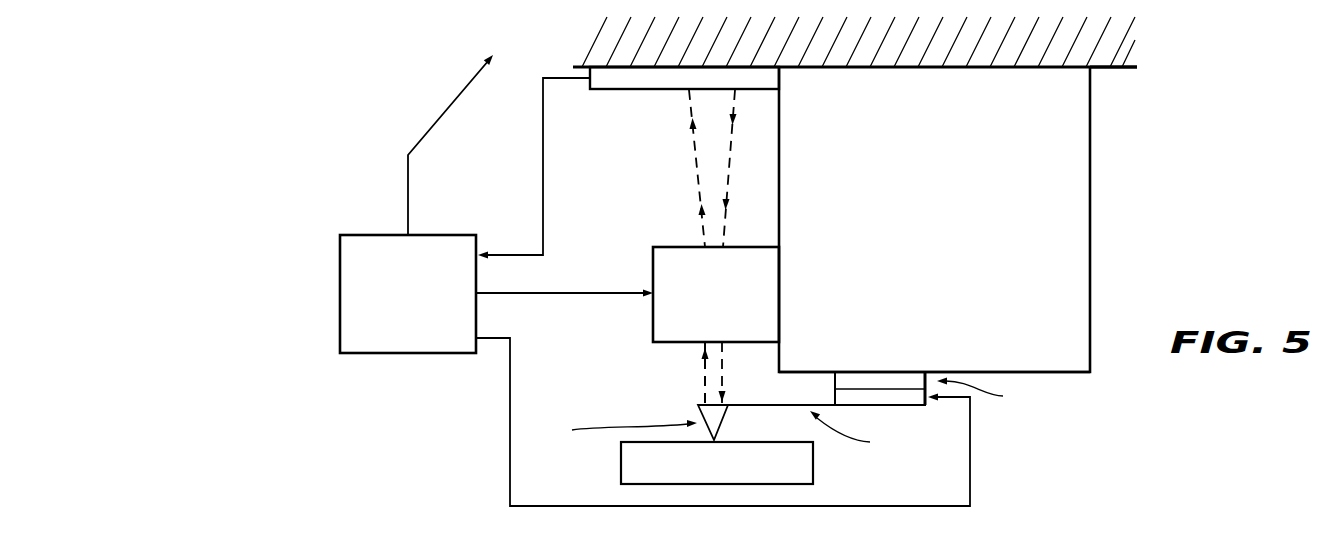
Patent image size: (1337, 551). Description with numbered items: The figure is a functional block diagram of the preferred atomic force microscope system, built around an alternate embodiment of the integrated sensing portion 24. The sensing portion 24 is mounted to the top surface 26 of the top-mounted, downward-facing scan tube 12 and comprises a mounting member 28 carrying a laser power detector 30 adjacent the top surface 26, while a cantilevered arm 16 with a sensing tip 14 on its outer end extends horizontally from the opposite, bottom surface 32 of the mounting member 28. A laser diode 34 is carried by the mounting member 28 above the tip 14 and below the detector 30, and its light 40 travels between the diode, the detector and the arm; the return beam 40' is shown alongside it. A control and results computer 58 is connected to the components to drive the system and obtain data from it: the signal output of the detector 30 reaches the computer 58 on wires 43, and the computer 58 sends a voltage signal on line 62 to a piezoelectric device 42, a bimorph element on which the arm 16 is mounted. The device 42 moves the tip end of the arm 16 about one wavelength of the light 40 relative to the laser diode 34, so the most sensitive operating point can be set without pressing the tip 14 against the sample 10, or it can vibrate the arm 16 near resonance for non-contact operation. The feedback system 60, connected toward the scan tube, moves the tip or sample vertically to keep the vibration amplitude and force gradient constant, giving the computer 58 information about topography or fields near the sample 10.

The sample 10 is at (627, 468).
The scan tube 12 is at (591, 38).
The sensing tip 14 is at (728, 409).
The cantilevered arm 16 is at (795, 405).
The sensing portion 24 is at (634, 353).
The top surface 26 is at (1106, 70).
The mounting member 28 is at (1090, 254).
The laser power detector 30 is at (638, 90).
The bottom surface 32 is at (998, 372).
The laser diode 34 is at (656, 262).
The light 40 is at (684, 258).
The reflected laser beam 40' is at (672, 373).
The piezoelectric device 42 is at (892, 385).
The wires 43 is at (545, 211).
The control and results computer 58 is at (345, 311).
The feedback system 60 is at (388, 153).
The line 62 is at (510, 458).